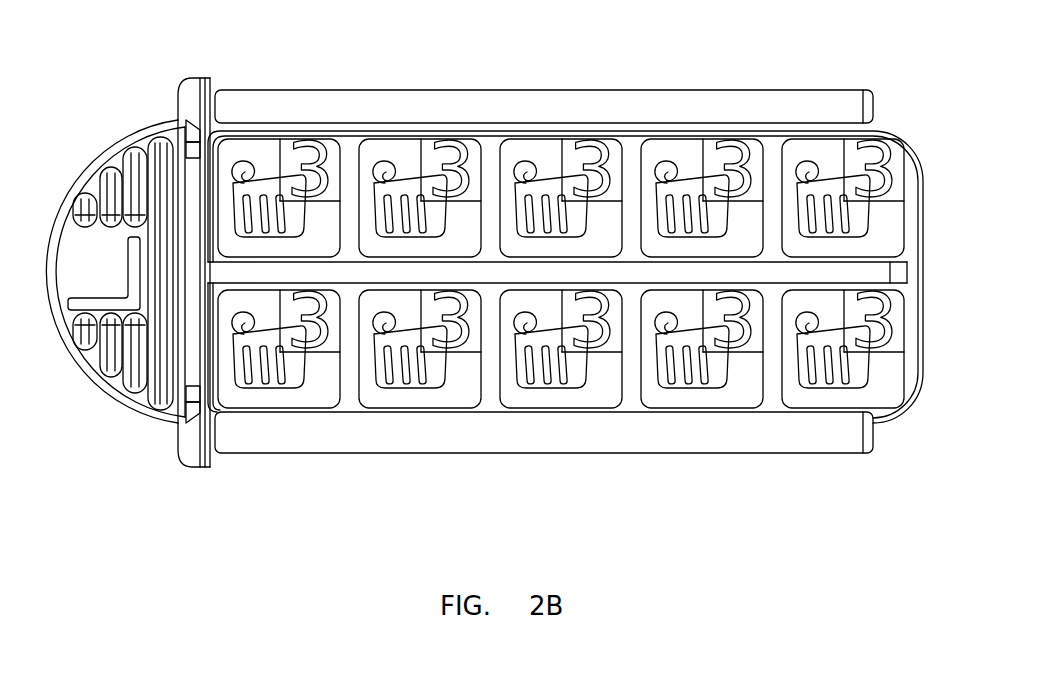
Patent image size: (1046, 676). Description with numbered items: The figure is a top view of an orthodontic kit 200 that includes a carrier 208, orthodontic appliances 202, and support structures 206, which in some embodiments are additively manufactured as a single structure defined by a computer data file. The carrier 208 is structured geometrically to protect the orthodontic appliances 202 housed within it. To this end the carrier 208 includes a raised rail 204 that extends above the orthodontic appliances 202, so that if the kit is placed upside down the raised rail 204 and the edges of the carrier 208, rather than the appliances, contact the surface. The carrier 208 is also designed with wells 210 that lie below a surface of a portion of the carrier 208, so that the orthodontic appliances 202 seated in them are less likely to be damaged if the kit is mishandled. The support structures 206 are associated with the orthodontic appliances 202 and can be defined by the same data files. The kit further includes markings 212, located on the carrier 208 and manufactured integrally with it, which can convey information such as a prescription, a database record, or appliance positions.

The orthodontic kit 200 is at (126, 68).
The orthodontic appliances 202 is at (870, 375).
The raised rail 204 is at (905, 270).
The support structures 206 is at (397, 150).
The carrier 208 is at (756, 92).
The wells 210 is at (683, 150).
The markings 212 is at (326, 140).